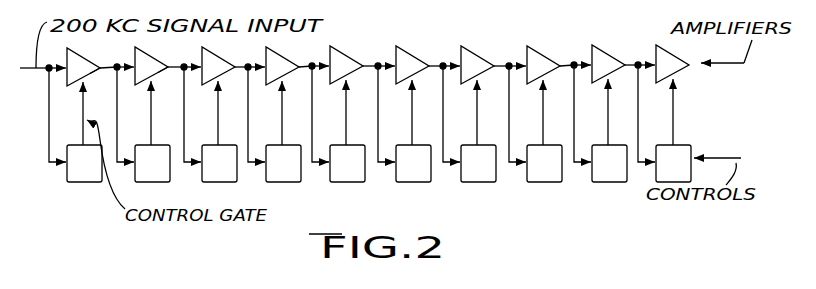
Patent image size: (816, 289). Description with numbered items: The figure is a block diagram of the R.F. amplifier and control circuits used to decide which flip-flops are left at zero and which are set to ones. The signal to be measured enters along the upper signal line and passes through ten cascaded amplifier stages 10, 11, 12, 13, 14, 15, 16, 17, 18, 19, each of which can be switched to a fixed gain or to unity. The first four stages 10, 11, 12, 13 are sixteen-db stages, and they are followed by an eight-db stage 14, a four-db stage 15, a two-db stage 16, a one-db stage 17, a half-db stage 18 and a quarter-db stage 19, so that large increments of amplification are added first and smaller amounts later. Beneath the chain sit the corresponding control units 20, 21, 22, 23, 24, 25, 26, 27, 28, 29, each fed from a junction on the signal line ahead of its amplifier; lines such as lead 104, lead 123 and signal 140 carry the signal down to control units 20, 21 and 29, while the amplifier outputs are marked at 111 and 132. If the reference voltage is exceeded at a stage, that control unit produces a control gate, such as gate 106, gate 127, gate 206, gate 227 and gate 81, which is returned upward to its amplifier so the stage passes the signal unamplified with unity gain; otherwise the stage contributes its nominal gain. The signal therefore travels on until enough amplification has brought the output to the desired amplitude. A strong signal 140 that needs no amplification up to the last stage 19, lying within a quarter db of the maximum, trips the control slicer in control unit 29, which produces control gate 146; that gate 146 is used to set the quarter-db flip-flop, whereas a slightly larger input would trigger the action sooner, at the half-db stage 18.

The amplifier stage 10 is at (86, 62).
The amplifier stage 11 is at (154, 61).
The amplifier stage 12 is at (221, 61).
The amplifier stage 13 is at (285, 61).
The amplifier stage 14 is at (349, 60).
The amplifier stage 15 is at (415, 60).
The amplifier stage 16 is at (480, 60).
The amplifier stage 17 is at (546, 60).
The amplifier stage 18 is at (608, 57).
The amplifier stage 19 is at (663, 56).
The control unit 20 is at (84, 163).
The control unit 21 is at (152, 163).
The control unit 22 is at (219, 163).
The control unit 23 is at (283, 163).
The control unit 24 is at (347, 163).
The control unit 25 is at (413, 163).
The control unit 26 is at (478, 163).
The control unit 27 is at (544, 163).
The control unit 28 is at (609, 163).
The control unit 29 is at (673, 163).
The signal input lead to control gate 20 104 is at (36, 115).
The lead 106 is at (45, 115).
The amplifier 10 output 111 is at (103, 83).
The signal lead to control gate 21 123 is at (131, 114).
The control gate 127 is at (166, 113).
The amplifier 11 output 132 is at (170, 86).
The gate 22 output lead 206 is at (233, 113).
The gate 23 output lead 227 is at (297, 113).
The gate 24 output lead 81 is at (359, 112).
The strong signal 140 is at (684, 113).
The control gate 146 is at (709, 112).